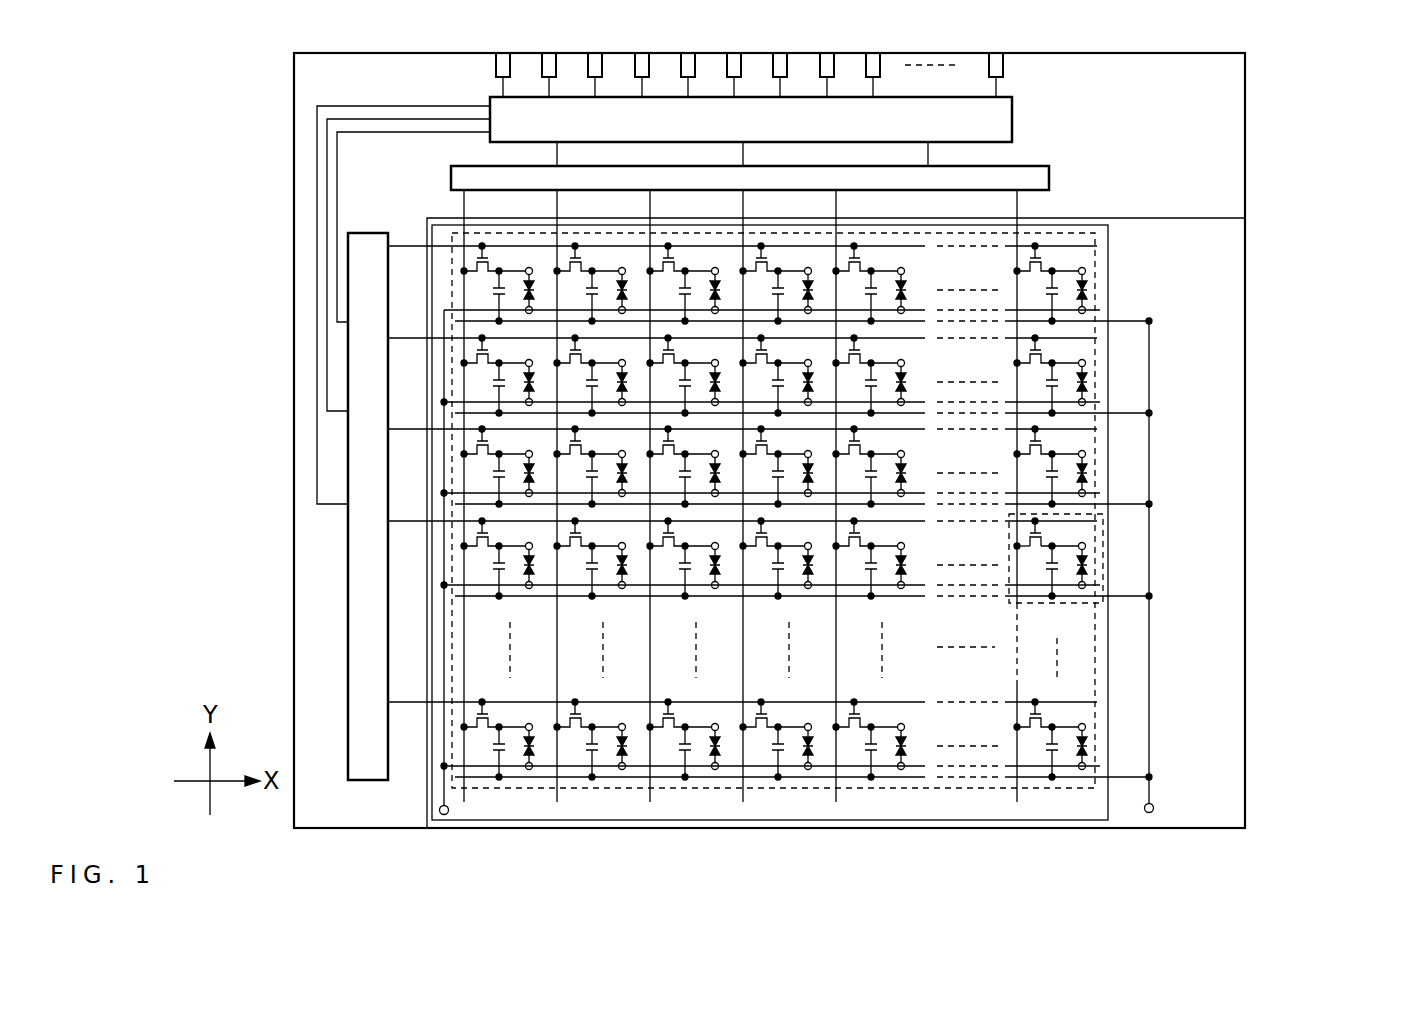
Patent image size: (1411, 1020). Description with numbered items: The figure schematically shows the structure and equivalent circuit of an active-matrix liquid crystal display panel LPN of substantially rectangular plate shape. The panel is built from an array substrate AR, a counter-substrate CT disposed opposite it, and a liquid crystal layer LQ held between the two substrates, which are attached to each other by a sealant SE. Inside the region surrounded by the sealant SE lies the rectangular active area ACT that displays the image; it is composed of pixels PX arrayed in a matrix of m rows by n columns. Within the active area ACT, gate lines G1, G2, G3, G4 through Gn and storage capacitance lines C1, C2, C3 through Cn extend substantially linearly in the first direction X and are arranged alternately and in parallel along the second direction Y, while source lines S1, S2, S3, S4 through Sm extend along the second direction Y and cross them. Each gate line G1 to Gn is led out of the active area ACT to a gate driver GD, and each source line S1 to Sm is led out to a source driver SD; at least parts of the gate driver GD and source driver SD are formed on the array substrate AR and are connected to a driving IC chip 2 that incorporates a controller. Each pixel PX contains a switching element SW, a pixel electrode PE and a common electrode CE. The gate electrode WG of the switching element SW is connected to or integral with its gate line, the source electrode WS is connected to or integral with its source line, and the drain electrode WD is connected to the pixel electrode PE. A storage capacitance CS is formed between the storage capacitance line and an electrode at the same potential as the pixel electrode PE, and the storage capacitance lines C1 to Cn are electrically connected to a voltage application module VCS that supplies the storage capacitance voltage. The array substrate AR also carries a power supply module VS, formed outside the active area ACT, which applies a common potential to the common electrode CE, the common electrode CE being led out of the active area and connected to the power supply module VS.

The liquid crystal display panel LPN is at (1276, 69).
The driving IC chip 2 is at (1012, 97).
The source driver SD is at (1052, 177).
The counter-substrate CT is at (1210, 218).
The sealant SE is at (1055, 820).
The active area ACT is at (1098, 352).
The gate driver GD is at (348, 630).
The array substrate AR is at (363, 812).
The source line S1 is at (467, 207).
The source line S2 is at (560, 207).
The source line S3 is at (653, 207).
The source line S4 is at (746, 207).
The source line Sm is at (1020, 207).
The gate line G1 is at (402, 244).
The gate line G2 is at (402, 336).
The gate line G3 is at (402, 427).
The gate line G4 is at (402, 519).
The gate line Gn is at (402, 700).
The storage capacitance line C1 is at (1121, 319).
The storage capacitance line C2 is at (1121, 411).
The storage capacitance line C3 is at (1121, 502).
The storage capacitance line Cn is at (1121, 774).
The voltage application module VCS is at (1153, 806).
The power supply module VS is at (449, 813).
The pixel PX is at (1103, 608).
The switching element SW is at (1009, 540).
The gate electrode WG is at (1033, 531).
The source electrode WS is at (1022, 551).
The drain electrode WD is at (1049, 551).
The storage capacitance CS is at (1058, 576).
The pixel electrode PE is at (1086, 546).
The liquid crystal layer LQ is at (1087, 564).
The common electrode CE is at (1087, 585).